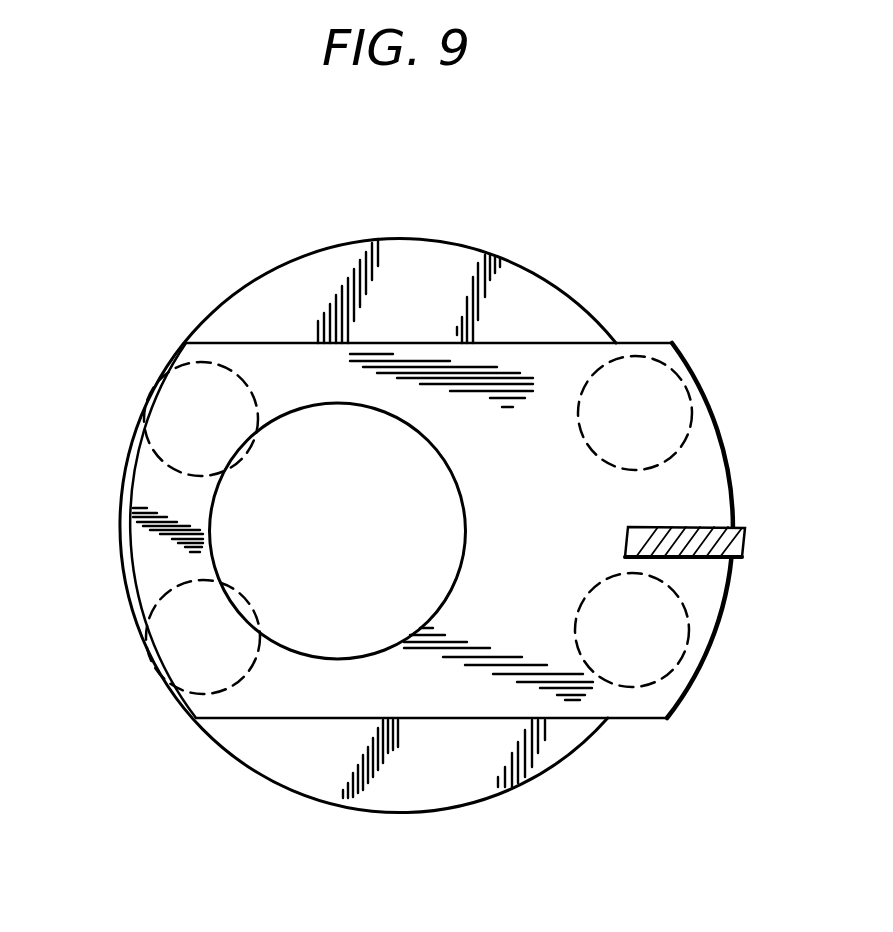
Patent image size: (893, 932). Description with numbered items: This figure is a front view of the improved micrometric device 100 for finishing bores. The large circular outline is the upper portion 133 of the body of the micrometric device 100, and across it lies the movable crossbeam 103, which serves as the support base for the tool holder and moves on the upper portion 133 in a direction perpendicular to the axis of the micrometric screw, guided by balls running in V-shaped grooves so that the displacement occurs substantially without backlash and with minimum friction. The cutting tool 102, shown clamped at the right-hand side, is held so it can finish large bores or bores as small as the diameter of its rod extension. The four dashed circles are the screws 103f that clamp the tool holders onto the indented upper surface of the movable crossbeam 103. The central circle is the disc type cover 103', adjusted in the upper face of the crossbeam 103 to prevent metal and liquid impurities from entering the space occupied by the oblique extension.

The micrometric device 100 is at (413, 556).
The cutting tool 102 is at (727, 527).
The movable crossbeam 103 is at (418, 516).
The screws 103f is at (662, 386).
The disc type cover 103' is at (281, 569).
The upper portion 133 is at (407, 278).